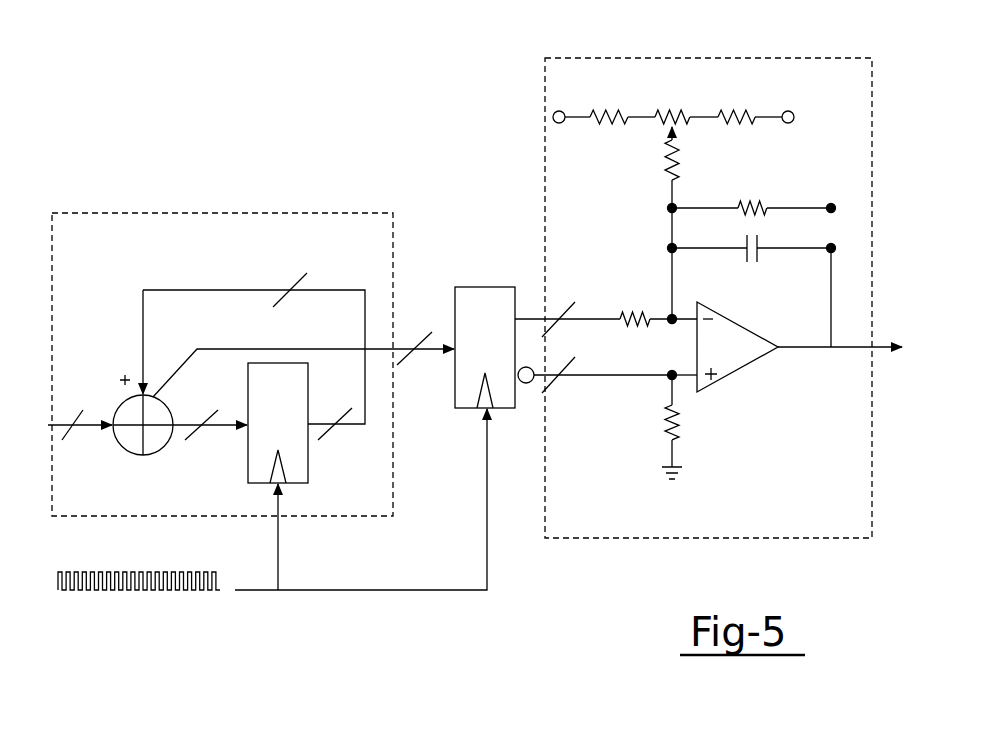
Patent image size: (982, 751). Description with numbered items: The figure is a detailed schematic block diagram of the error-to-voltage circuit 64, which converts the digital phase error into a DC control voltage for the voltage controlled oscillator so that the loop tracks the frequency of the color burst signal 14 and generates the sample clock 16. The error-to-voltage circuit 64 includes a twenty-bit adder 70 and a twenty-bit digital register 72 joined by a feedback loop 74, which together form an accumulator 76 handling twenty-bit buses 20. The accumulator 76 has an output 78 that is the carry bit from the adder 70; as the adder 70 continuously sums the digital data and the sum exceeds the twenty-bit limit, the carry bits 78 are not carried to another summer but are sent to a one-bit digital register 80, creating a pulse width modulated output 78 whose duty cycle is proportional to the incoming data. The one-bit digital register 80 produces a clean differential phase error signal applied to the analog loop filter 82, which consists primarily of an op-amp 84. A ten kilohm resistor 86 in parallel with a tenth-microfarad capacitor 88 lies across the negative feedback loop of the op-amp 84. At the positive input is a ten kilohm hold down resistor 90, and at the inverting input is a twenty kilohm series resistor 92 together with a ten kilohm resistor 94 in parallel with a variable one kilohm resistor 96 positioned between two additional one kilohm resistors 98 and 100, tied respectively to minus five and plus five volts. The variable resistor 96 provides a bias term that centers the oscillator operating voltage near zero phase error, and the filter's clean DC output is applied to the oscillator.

The error-to-voltage circuit 64 is at (388, 107).
The accumulator 76 is at (237, 213).
The feedback loop 74 is at (143, 300).
The 20-bit adder 70 is at (128, 440).
The color burst signal 14 is at (80, 413).
The 20-bit bus 20 is at (262, 346).
The 20-bit digital register 72 is at (300, 463).
The output 78 is at (280, 348).
The 1-bit digital register 80 is at (487, 287).
The sample clock 16 is at (253, 592).
The analog loop filter 82 is at (872, 118).
The 1K ohm resistor 98 is at (590, 110).
The variable 1K ohm resistor 96 is at (692, 112).
The 1K ohm resistor 100 is at (760, 112).
The 10K ohm resistor 94 is at (672, 192).
The 10K ohm resistor 86 is at (748, 202).
The 0.1 µF capacitor 88 is at (760, 260).
The 20K ohm series resistor 92 is at (628, 336).
The op-amp 84 is at (737, 355).
The 10K ohm hold down resistor 90 is at (677, 452).